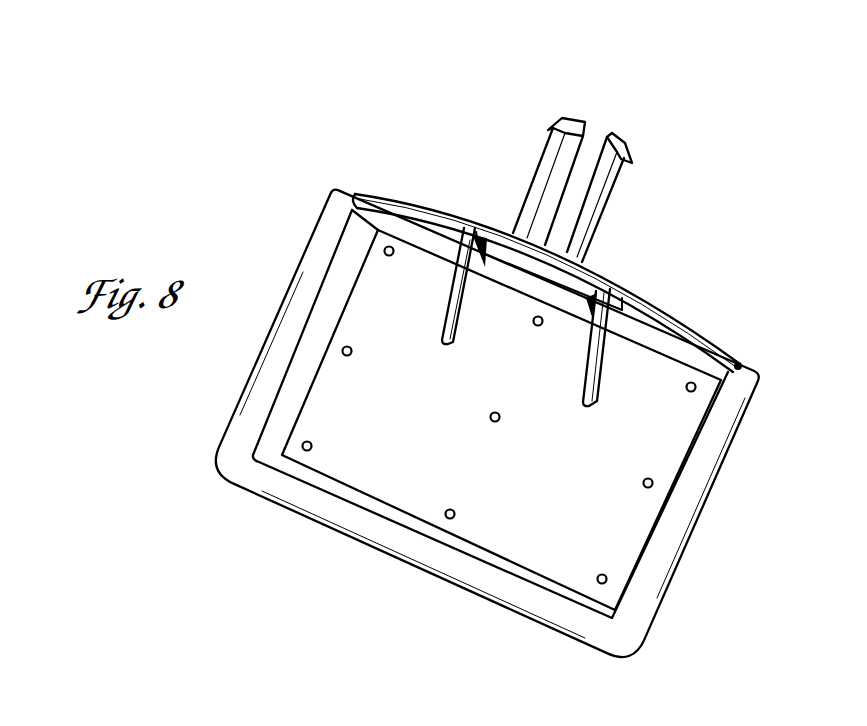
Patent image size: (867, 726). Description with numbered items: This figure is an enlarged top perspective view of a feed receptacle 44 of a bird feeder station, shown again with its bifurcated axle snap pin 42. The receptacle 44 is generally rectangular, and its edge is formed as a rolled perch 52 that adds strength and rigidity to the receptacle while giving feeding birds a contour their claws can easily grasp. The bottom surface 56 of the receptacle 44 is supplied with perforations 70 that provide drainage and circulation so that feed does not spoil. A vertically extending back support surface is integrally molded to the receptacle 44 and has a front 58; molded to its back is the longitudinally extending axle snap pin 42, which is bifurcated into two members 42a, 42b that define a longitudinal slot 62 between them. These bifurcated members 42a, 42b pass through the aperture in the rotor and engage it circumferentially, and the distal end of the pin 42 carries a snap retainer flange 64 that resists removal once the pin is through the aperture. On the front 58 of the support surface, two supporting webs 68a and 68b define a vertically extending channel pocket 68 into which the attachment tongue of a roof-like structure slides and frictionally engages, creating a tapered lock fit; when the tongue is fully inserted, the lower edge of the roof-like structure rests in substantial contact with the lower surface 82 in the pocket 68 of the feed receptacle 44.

The feed receptacle 44 is at (282, 217).
The rolled perch 52 is at (310, 508).
The bottom surface 56 is at (502, 543).
The front 58 is at (646, 326).
The axle snap pin 42 is at (655, 145).
The bifurcated member 42a is at (563, 118).
The bifurcated member 42b is at (612, 134).
The longitudinal slot 62 is at (594, 138).
The snap retainer flange 64 is at (548, 131).
The channel pocket 68 is at (484, 233).
The supporting web 68a is at (576, 318).
The supporting web 68b is at (493, 268).
The lower surface 82 is at (519, 268).
The perforations 70 is at (651, 488).